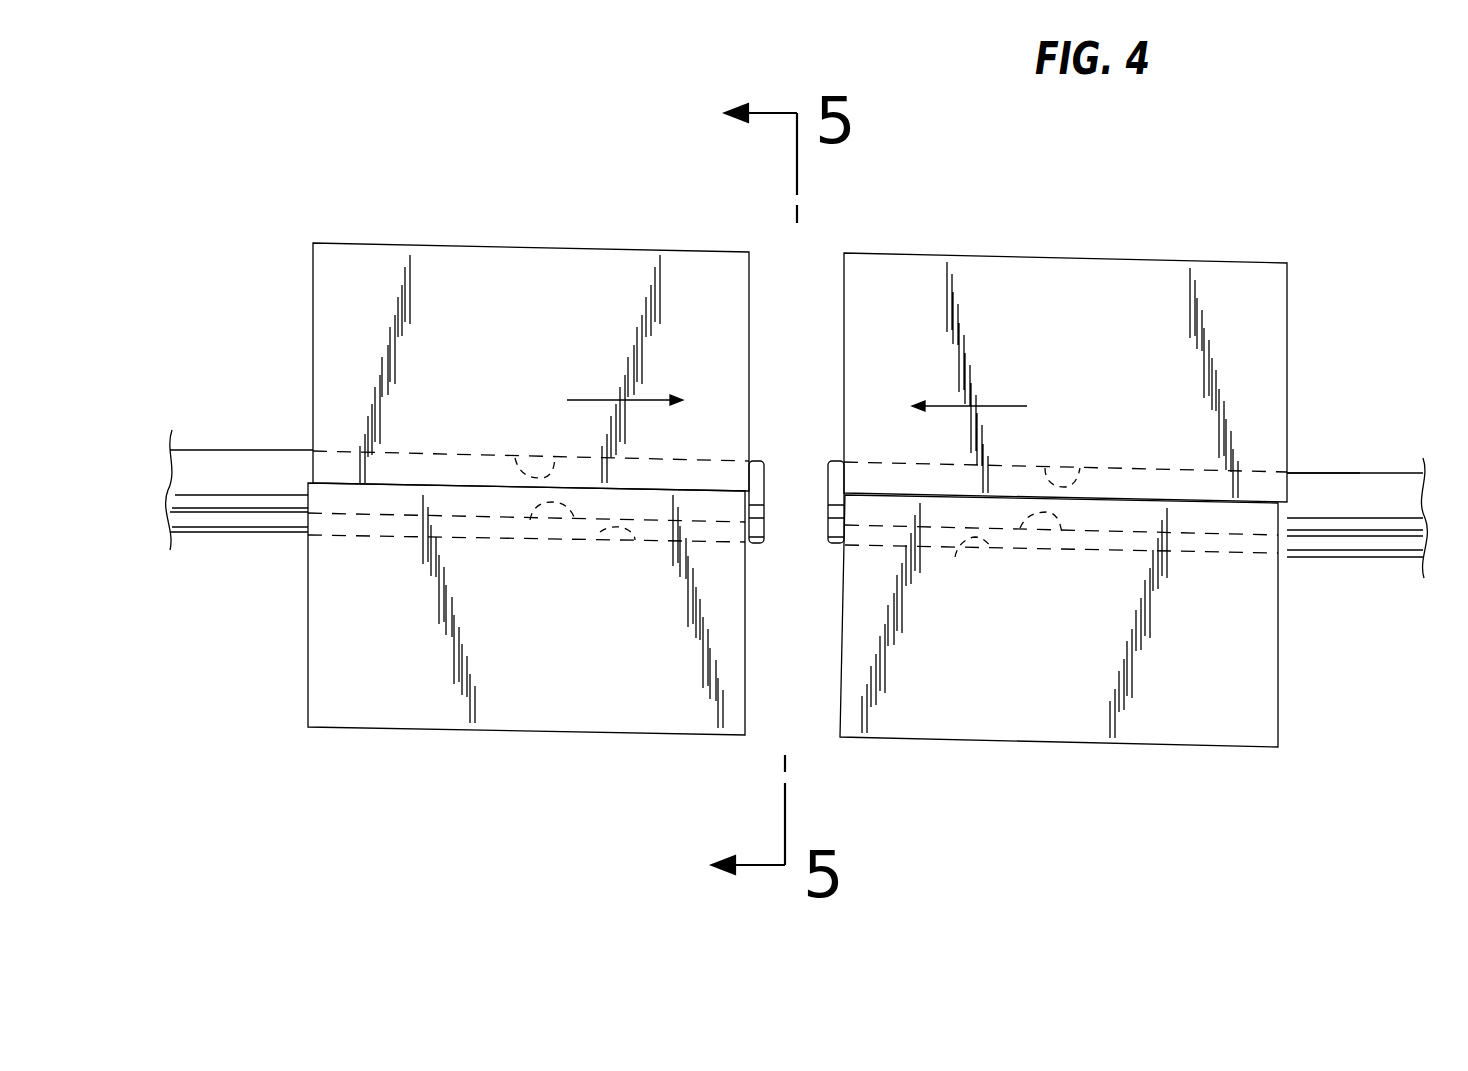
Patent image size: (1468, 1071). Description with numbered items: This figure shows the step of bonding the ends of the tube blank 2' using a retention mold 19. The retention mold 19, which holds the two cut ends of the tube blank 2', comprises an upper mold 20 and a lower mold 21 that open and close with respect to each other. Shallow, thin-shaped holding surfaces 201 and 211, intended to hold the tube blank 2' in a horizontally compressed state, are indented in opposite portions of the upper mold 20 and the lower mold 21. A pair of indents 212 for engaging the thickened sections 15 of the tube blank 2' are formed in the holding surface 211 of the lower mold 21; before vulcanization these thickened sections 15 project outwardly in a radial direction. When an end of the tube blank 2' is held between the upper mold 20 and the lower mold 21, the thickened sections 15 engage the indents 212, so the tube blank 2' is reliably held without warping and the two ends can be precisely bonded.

The retention mold 19 is at (525, 236).
The upper mold 20 is at (303, 296).
The lower mold 21 is at (299, 643).
The holding surface 201 is at (520, 467).
The holding surface 211 is at (530, 520).
The indent 212 is at (635, 540).
The thickened section 15 is at (1356, 548).
The tube blank 2' is at (1363, 414).